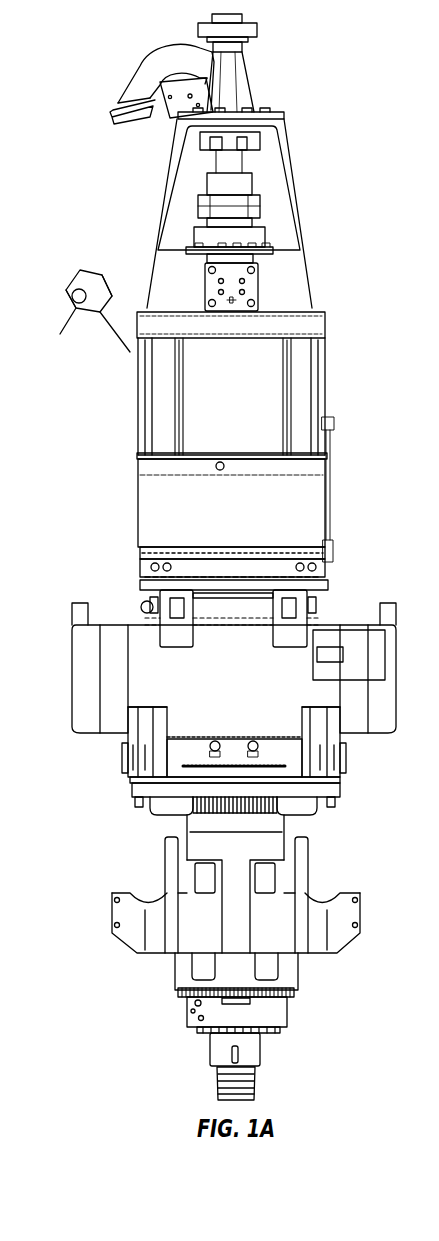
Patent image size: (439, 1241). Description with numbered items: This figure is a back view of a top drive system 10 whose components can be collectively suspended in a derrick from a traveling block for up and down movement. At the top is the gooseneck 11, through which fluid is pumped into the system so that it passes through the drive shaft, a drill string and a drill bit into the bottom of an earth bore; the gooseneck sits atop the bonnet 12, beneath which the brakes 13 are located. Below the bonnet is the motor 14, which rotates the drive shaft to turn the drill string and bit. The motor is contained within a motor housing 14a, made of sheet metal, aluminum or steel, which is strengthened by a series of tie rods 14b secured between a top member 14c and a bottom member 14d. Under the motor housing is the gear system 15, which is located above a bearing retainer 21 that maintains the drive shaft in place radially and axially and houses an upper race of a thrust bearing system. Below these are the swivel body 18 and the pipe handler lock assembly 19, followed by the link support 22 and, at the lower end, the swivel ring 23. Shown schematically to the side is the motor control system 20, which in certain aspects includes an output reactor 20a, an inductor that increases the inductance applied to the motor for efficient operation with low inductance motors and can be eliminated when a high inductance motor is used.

The top drive system 10 is at (313, 132).
The gooseneck 11 is at (130, 75).
The bonnet 12 is at (294, 183).
The brakes 13 is at (259, 293).
The motor 14 is at (323, 397).
The motor housing 14a is at (302, 367).
The tie rods 14b is at (177, 408).
The top member 14c is at (325, 334).
The bottom member 14d is at (332, 452).
The gear system 15 is at (315, 515).
The swivel body 18 is at (83, 665).
The pipe handler lock assembly 19 is at (338, 774).
The motor control system 20 is at (97, 268).
The output reactor 20a is at (74, 312).
The bearing retainer 21 is at (143, 605).
The link support 22 is at (323, 905).
The swivel ring 23 is at (284, 1008).